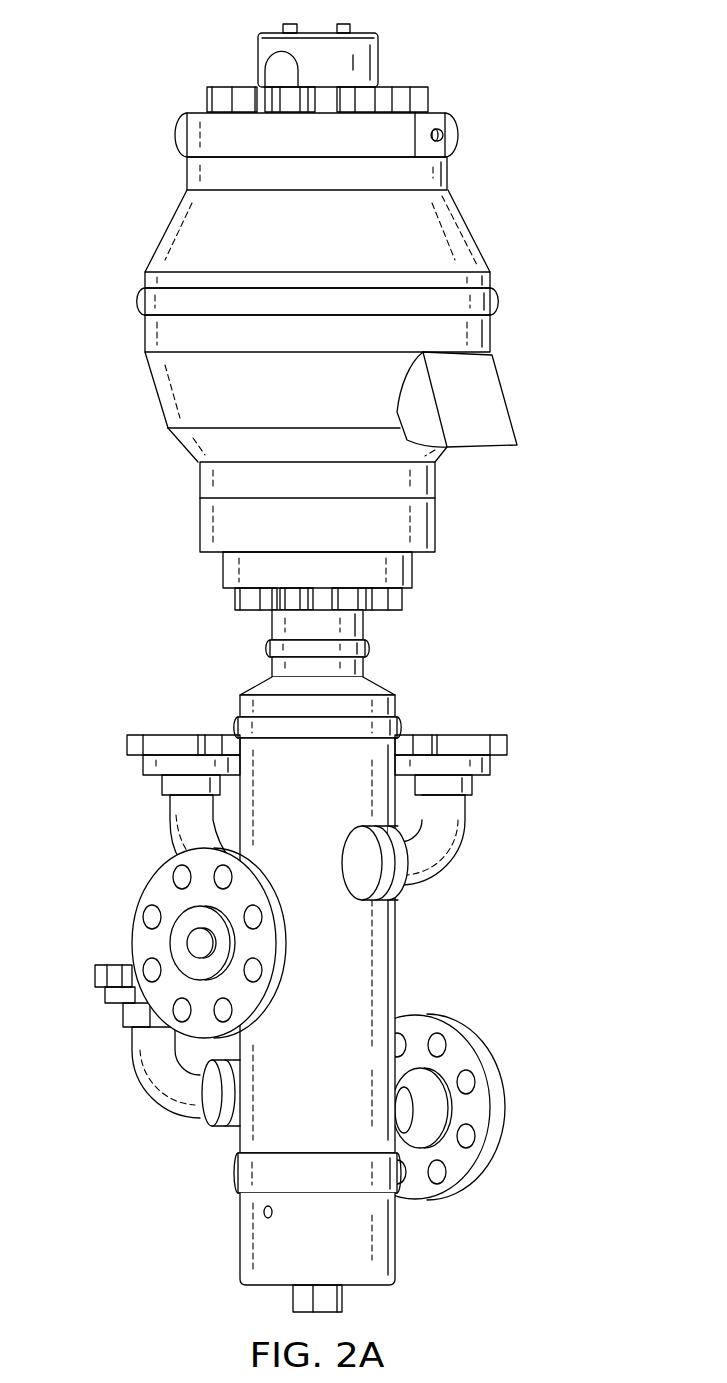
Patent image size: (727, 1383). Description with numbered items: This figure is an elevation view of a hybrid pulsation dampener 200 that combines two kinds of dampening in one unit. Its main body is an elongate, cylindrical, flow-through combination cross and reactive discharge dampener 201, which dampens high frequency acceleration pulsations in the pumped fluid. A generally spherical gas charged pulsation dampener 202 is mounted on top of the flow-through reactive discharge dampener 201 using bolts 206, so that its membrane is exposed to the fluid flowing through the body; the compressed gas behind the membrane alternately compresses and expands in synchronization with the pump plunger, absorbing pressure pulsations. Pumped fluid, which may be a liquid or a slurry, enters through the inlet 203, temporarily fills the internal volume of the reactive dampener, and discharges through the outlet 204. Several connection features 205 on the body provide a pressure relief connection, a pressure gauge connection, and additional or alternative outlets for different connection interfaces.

The hybrid pulsation dampener 200 is at (115, 53).
The flow-through reactive discharge dampener 201 is at (458, 1238).
The gas charged pulsation dampener 202 is at (522, 254).
The inlet 203 is at (132, 945).
The outlet 204 is at (505, 1110).
The connection features 205 is at (127, 743).
The bolts 206 is at (235, 600).